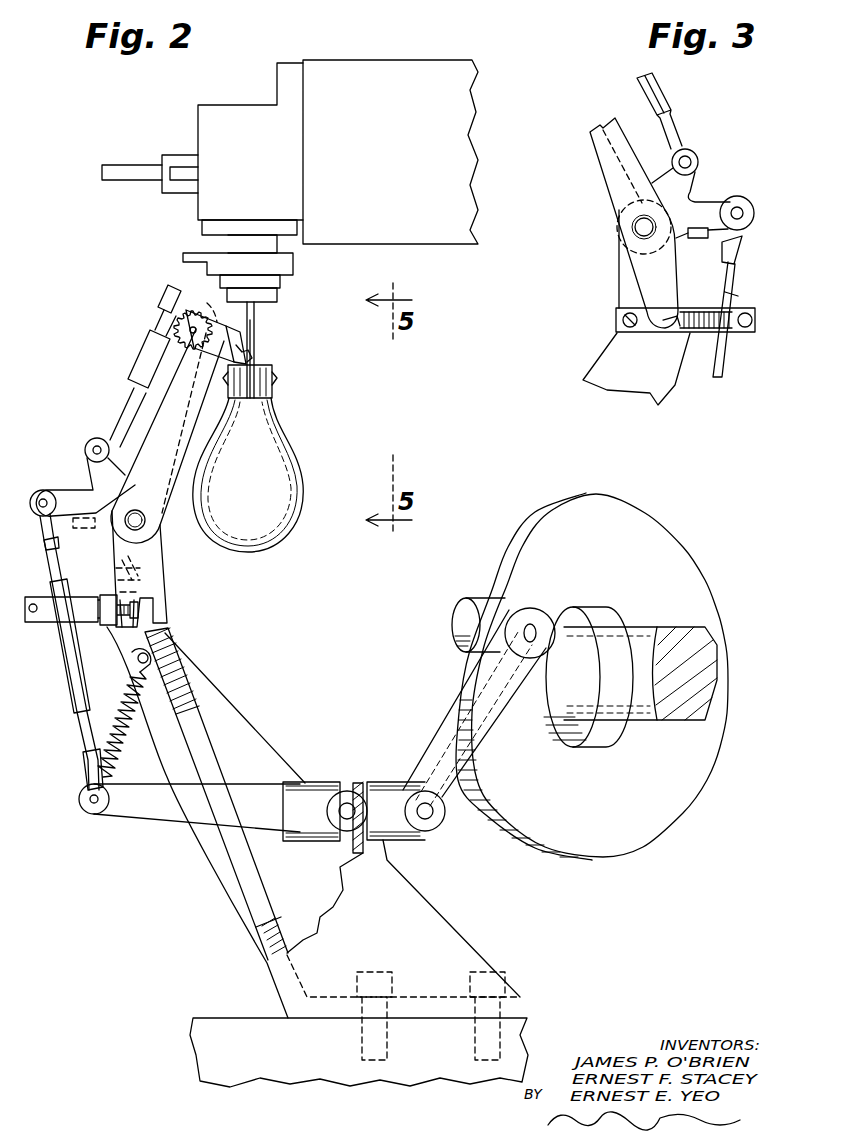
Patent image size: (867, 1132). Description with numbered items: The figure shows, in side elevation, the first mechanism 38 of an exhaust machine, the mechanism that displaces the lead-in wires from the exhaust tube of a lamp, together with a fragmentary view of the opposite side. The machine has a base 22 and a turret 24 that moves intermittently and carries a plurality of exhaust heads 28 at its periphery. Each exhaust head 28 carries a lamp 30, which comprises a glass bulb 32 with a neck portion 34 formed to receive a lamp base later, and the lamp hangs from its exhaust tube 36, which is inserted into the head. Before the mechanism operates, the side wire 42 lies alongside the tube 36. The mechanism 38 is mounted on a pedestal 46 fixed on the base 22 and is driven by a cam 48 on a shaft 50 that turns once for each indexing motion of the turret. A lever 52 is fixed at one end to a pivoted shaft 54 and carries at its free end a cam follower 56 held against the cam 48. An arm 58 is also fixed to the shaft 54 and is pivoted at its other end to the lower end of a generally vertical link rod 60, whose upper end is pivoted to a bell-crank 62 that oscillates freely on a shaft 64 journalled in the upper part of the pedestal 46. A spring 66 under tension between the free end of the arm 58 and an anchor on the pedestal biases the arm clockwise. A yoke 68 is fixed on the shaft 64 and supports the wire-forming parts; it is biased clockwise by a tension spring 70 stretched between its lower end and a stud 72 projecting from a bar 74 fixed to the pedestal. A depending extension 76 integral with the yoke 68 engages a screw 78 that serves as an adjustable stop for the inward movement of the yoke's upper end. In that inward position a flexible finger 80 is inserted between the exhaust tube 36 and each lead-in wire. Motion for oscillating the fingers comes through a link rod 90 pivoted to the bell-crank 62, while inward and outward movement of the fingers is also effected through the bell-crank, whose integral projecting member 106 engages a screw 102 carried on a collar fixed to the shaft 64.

In FIG. 2, the base 22 is at (236, 1018).
In FIG. 2, the turret 24 is at (420, 237).
In FIG. 2, the exhaust head 28 is at (200, 207).
In FIG. 2, the lamp 30 is at (292, 550).
In FIG. 2, the bulb 32 is at (302, 480).
In FIG. 2, the neck portion 34 is at (273, 375).
In FIG. 2, the exhaust tube 36 is at (256, 308).
In FIG. 2, the first mechanism 38 is at (196, 862).
In FIG. 2, the side wire 42 is at (253, 333).
In FIG. 2, the pedestal 46 is at (446, 933).
In FIG. 3, the pedestal 46 is at (612, 356).
In FIG. 2, the cam 48 is at (690, 564).
In FIG. 2, the shaft 50 is at (640, 633).
In FIG. 2, the lever 52 is at (433, 723).
In FIG. 2, the pivoted shaft 54 is at (432, 816).
In FIG. 2, the cam follower 56 is at (464, 612).
In FIG. 2, the arm 58 is at (241, 798).
In FIG. 2, the link rod 60 is at (72, 701).
In FIG. 3, the link rod 60 is at (736, 284).
In FIG. 2, the bell-crank 62 is at (92, 471).
In FIG. 3, the bell-crank 62 is at (703, 202).
In FIG. 2, the shaft 64 is at (140, 522).
In FIG. 2, the spring 66 is at (118, 759).
In FIG. 2, the yoke 68 is at (183, 411).
In FIG. 3, the yoke 68 is at (613, 192).
In FIG. 3, the tension spring 70 is at (696, 318).
In FIG. 2, the stud 72 is at (33, 604).
In FIG. 3, the stud 72 is at (748, 326).
In FIG. 2, the bar 74 is at (46, 623).
In FIG. 2, the depending extension 76 is at (145, 596).
In FIG. 2, the screw 78 is at (84, 601).
In FIG. 2, the flexible finger 80 is at (256, 357).
In FIG. 2, the link rod 90 is at (146, 358).
In FIG. 2, the screw 102 is at (150, 573).
In FIG. 2, the projecting member 106 is at (76, 528).
In FIG. 3, the projecting member 106 is at (698, 240).